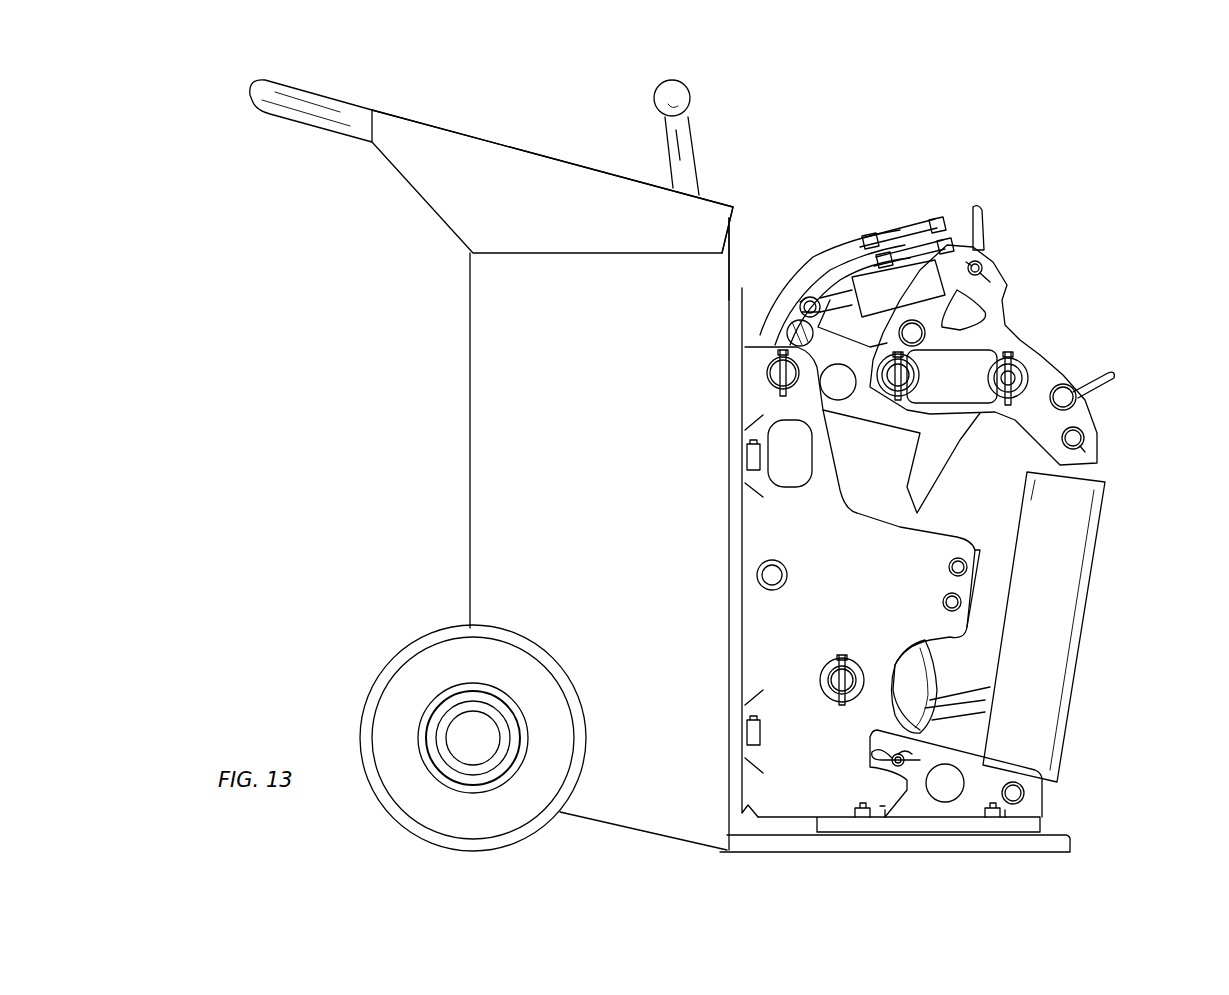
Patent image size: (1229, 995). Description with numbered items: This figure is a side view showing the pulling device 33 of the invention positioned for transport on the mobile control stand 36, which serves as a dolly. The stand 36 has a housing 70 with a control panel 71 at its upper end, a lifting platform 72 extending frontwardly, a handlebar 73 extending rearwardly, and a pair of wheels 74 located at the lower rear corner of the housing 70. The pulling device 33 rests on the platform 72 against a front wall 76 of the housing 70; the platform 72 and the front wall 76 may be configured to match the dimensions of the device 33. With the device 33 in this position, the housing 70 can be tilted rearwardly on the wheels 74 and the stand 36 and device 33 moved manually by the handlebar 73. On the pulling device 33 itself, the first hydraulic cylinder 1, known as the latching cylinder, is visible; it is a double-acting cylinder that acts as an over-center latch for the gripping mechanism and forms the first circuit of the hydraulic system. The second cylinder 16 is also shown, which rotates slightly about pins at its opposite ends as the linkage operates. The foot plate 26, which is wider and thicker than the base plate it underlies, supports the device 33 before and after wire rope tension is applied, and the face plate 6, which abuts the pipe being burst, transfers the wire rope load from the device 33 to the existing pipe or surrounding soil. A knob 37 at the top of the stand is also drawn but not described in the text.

The first hydraulic cylinder 1 is at (903, 228).
The face plate 6 is at (745, 650).
The second cylinder 16 is at (1088, 632).
The foot plate 26 is at (830, 830).
The pulling device 33 is at (977, 333).
The mobile control stand 36 is at (402, 275).
The control lever knob 37 is at (692, 102).
The housing 70 is at (470, 440).
The control panel 71 is at (522, 150).
The lifting platform 72 is at (1074, 842).
The handlebar 73 is at (252, 95).
The wheels 74 is at (420, 642).
The front wall 76 is at (741, 246).